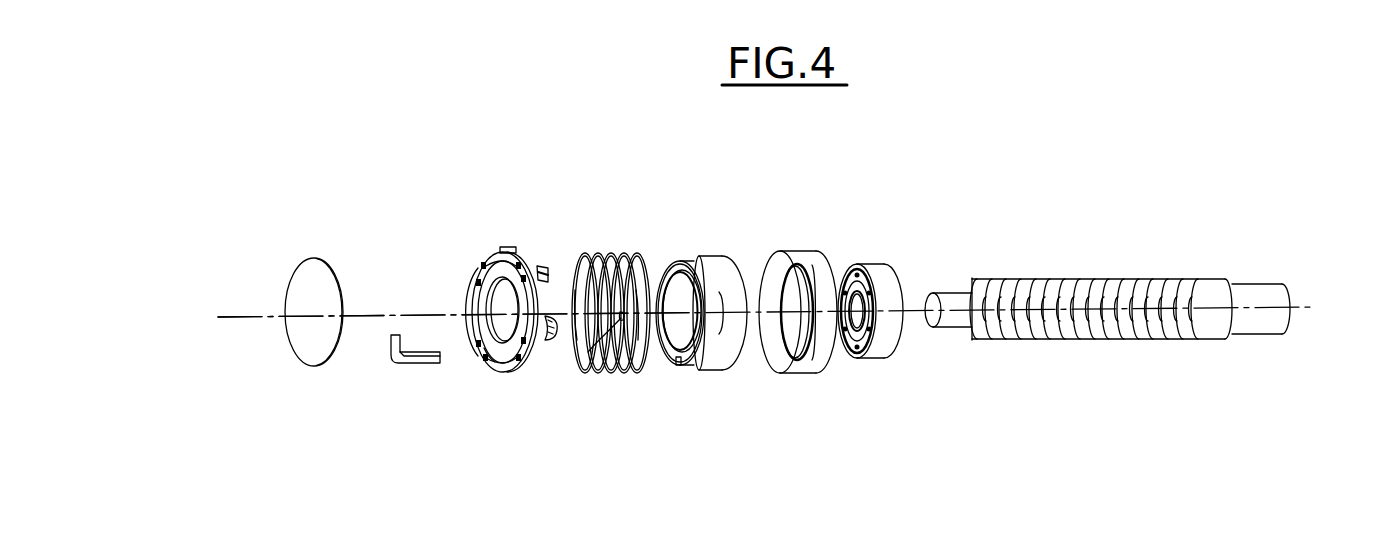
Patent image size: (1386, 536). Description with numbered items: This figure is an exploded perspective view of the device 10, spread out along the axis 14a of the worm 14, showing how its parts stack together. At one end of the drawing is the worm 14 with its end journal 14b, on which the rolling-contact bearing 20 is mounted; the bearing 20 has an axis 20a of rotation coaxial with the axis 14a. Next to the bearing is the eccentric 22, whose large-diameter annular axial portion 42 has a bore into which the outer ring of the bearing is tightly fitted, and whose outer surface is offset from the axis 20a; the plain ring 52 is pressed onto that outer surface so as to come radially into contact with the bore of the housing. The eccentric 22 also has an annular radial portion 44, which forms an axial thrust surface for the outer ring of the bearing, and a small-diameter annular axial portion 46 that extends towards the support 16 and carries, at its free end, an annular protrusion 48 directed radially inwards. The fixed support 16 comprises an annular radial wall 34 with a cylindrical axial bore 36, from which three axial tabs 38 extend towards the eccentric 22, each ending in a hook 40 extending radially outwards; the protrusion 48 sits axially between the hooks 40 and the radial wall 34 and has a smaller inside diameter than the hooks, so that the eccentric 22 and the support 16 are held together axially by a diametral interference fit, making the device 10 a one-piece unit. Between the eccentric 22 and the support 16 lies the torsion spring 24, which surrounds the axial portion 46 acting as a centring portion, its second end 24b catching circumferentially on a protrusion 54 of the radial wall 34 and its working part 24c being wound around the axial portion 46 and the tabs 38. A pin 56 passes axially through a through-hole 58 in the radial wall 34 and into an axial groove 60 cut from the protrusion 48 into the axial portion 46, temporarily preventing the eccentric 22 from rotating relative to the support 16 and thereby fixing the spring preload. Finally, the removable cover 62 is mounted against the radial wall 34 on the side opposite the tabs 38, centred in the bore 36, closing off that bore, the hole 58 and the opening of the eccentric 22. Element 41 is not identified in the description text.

The device 10 is at (731, 186).
The worm 14 is at (1060, 276).
The axis of the worm 14a is at (718, 316).
The end journal of the worm 14b is at (950, 291).
The support 16 is at (505, 375).
The rolling-contact bearing 20 is at (870, 361).
The axis of rotation of the bearing 20a is at (459, 315).
The eccentric 22 is at (732, 375).
The torsion spring 24 is at (617, 377).
The second end of the spring 24b is at (588, 358).
The working part of the spring 24c is at (634, 356).
The annular radial wall 34 is at (481, 310).
The cylindrical axial bore 36 is at (491, 296).
The axial tabs 38 is at (547, 279).
The hook 40 is at (540, 262).
The tab 41 is at (506, 249).
The large-diameter annular axial portion 42 is at (733, 257).
The annular radial portion 44 is at (697, 369).
The small-diameter annular axial portion 46 is at (693, 259).
The annular protrusion 48 is at (671, 269).
The plain ring 52 is at (801, 374).
The protrusion 54 is at (549, 302).
The pin 56 is at (411, 365).
The through-hole 58 is at (488, 364).
The axial groove 60 is at (678, 366).
The removable cover 62 is at (322, 257).